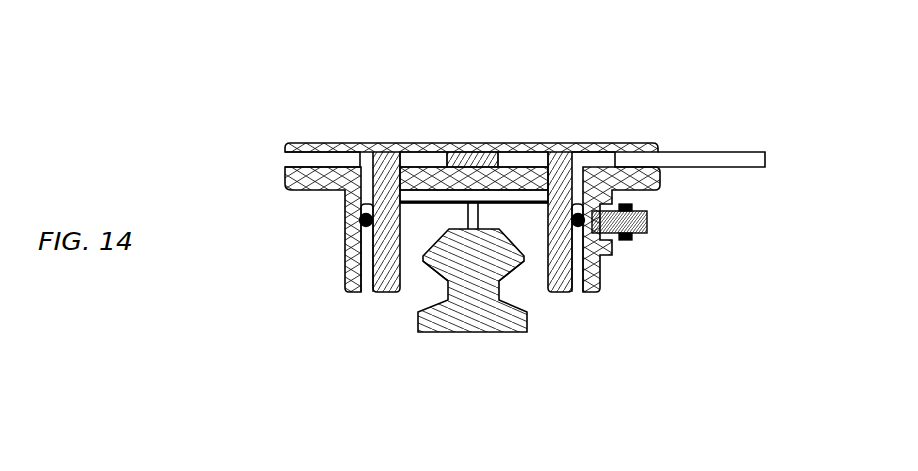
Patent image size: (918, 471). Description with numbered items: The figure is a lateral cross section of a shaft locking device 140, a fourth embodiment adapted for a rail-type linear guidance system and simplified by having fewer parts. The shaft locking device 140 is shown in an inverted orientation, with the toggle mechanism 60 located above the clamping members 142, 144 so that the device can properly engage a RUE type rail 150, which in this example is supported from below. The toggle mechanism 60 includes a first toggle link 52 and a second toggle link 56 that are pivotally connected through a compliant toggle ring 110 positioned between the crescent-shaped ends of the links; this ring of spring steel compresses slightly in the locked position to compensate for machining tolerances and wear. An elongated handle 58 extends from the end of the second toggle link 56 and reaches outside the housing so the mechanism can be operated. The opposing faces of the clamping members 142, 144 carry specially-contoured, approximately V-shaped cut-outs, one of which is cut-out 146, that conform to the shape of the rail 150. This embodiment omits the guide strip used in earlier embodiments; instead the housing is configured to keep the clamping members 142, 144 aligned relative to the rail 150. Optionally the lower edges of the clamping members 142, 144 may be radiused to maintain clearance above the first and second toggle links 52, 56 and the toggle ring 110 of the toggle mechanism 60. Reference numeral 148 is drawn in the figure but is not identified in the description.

The shaft locking device 140 is at (595, 110).
The toggle mechanism 60 is at (308, 162).
The first toggle link 52 is at (422, 162).
The compliant toggle ring 110 is at (473, 162).
The second toggle link 56 is at (528, 162).
The elongated handle 58 is at (697, 160).
The clamping member 142 is at (415, 277).
The clamping member 144 is at (532, 275).
The cut-out 146 is at (435, 268).
The second tapered surface 148 is at (510, 270).
The RUE type rail 150 is at (473, 315).